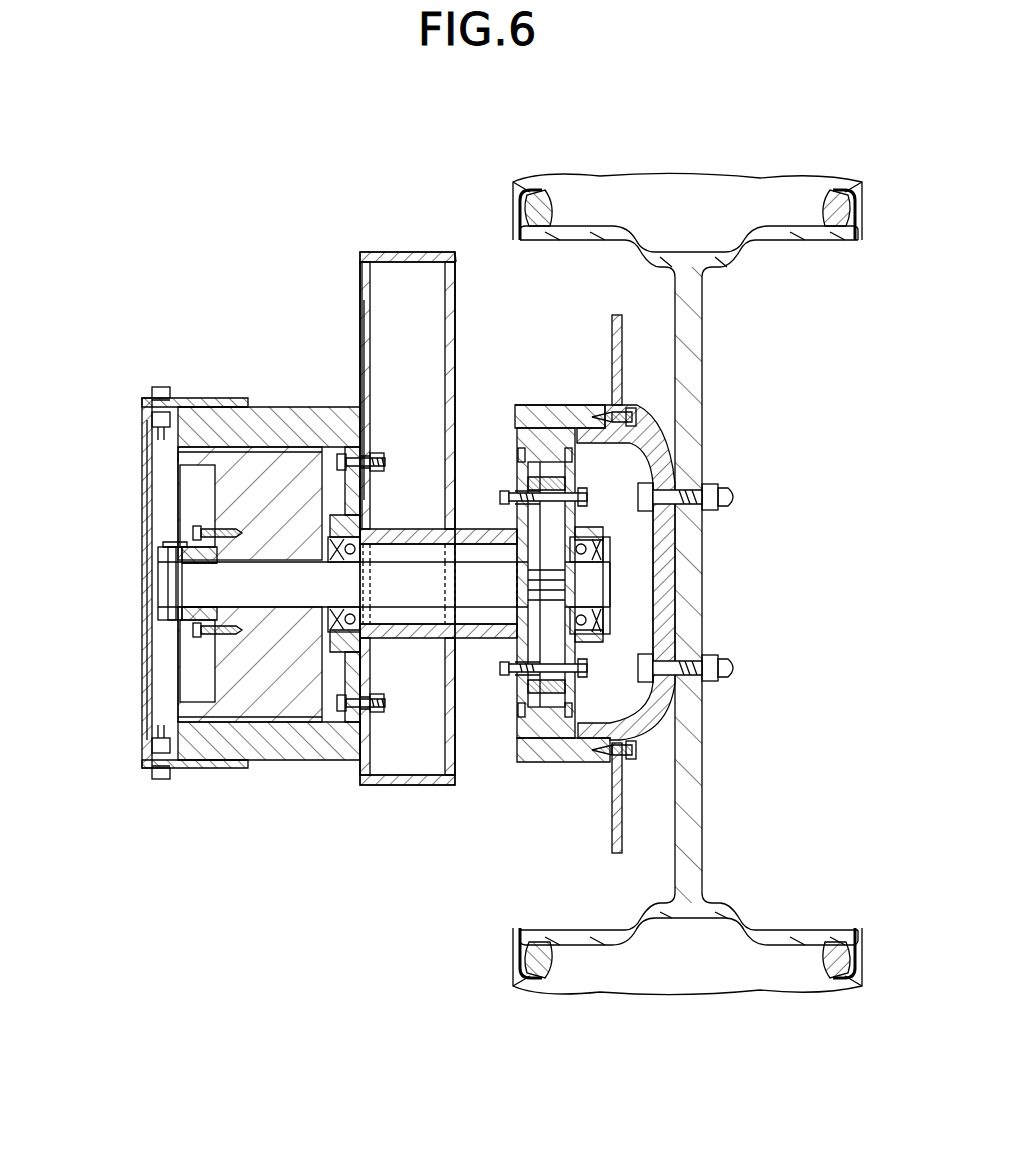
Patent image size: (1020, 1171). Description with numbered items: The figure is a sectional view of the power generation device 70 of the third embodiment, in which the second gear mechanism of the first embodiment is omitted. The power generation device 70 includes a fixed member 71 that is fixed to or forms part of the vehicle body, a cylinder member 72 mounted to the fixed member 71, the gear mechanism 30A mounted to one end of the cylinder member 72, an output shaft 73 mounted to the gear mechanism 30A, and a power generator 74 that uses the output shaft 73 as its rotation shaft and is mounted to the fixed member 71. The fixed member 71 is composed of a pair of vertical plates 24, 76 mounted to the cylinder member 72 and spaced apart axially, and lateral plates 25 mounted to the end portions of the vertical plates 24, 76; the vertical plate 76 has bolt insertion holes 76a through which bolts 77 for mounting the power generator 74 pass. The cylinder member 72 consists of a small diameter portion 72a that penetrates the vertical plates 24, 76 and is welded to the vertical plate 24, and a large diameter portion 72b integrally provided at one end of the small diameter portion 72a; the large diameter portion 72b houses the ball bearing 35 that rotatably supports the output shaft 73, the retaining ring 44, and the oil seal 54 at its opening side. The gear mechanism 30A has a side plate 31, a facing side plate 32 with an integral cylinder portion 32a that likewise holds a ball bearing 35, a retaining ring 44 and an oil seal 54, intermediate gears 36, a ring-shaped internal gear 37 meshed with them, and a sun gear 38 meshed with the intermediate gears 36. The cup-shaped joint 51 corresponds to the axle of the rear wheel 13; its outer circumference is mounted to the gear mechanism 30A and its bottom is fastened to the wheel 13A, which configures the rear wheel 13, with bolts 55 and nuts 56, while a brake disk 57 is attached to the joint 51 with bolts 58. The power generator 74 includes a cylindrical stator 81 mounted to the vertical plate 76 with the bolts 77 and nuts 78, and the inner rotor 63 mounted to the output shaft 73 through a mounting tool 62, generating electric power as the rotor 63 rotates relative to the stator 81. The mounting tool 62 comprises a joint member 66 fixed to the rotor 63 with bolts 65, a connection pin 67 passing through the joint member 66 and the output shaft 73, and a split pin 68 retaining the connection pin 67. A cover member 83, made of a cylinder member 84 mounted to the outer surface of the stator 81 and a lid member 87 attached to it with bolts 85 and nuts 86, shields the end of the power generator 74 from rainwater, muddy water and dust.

The rear wheel 13 is at (838, 242).
The wheel 13A is at (690, 363).
The vertical plate 24 is at (456, 262).
The lateral plate 25 is at (403, 252).
The gear mechanism 30A is at (516, 440).
The side plate 31 is at (520, 482).
The side plate 32 is at (640, 440).
The cylinder portion 32a is at (620, 545).
The ball bearing 35 is at (600, 550).
The intermediate gear 36 is at (535, 680).
The ring-shaped internal gear 37 is at (552, 763).
The sun gear 38 is at (595, 655).
The retaining ring 44 is at (340, 635).
The cup-shaped joint 51 is at (540, 402).
The oil seal 54 is at (605, 625).
The bolt 55 is at (667, 490).
The nut 56 is at (738, 494).
The brake disk 57 is at (612, 830).
The bolt 58 is at (607, 412).
The mounting tool 62 is at (150, 550).
The inner rotor 63 is at (222, 683).
The bolt 65 is at (200, 526).
The joint member 66 is at (172, 602).
The connection pin 67 is at (165, 582).
The split pin 68 is at (200, 616).
The power generation device 70 is at (236, 268).
The fixed member 71 is at (358, 268).
The cylinder member 72 is at (415, 650).
The small diameter portion 72a is at (445, 650).
The large diameter portion 72b is at (320, 520).
The output shaft 73 is at (483, 610).
The power generator 74 is at (207, 398).
The vertical plate 76 is at (358, 320).
The bolt insertion hole 76a is at (368, 455).
The bolt 77 is at (335, 455).
The nut 78 is at (352, 452).
The cylindrical stator 81 is at (232, 770).
The cover member 83 is at (140, 436).
The cylinder member 84 is at (197, 770).
The bolt 85 is at (160, 387).
The nut 86 is at (150, 398).
The lid member 87 is at (150, 482).